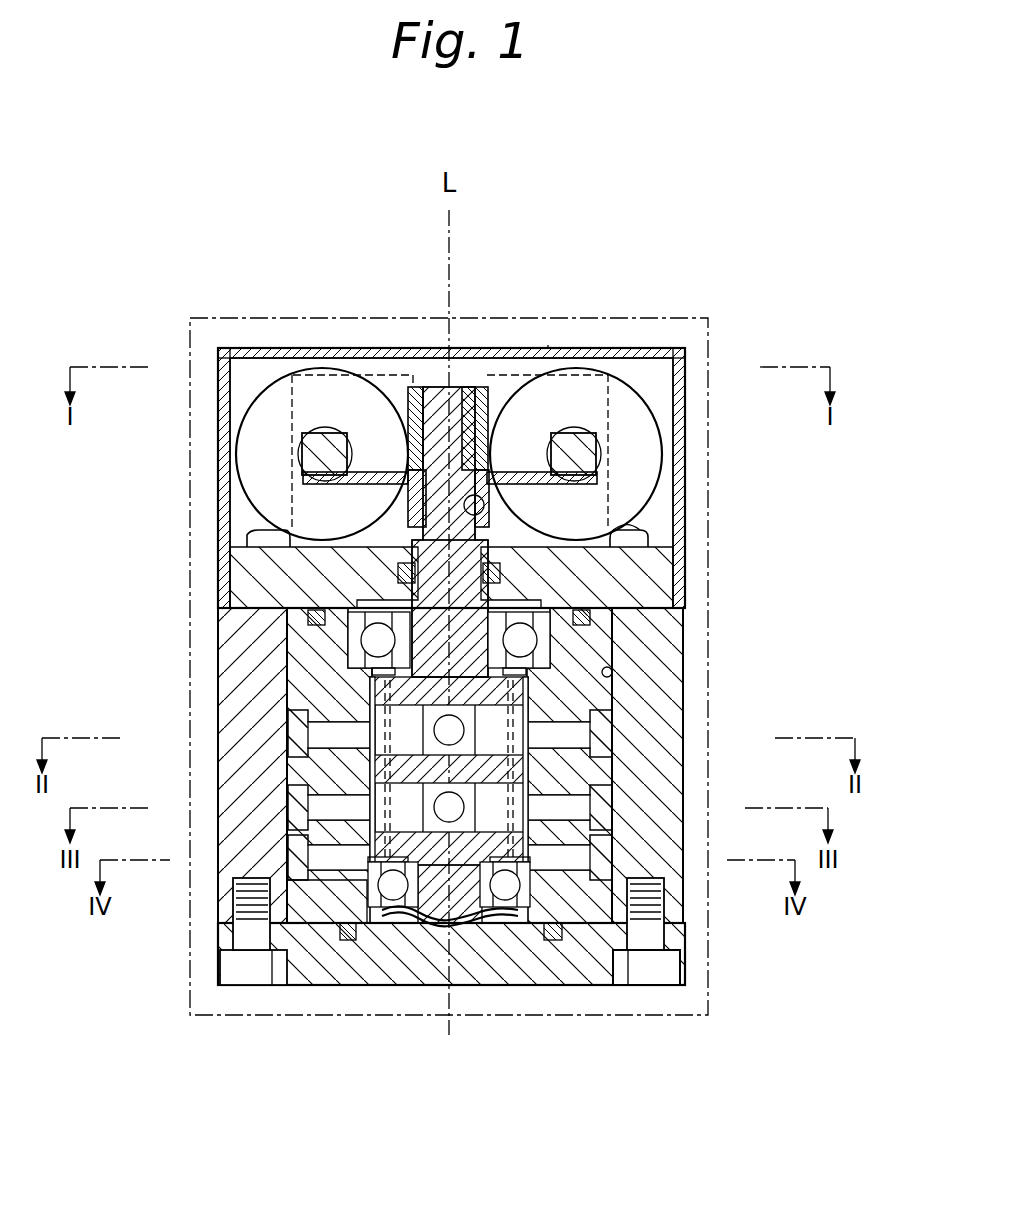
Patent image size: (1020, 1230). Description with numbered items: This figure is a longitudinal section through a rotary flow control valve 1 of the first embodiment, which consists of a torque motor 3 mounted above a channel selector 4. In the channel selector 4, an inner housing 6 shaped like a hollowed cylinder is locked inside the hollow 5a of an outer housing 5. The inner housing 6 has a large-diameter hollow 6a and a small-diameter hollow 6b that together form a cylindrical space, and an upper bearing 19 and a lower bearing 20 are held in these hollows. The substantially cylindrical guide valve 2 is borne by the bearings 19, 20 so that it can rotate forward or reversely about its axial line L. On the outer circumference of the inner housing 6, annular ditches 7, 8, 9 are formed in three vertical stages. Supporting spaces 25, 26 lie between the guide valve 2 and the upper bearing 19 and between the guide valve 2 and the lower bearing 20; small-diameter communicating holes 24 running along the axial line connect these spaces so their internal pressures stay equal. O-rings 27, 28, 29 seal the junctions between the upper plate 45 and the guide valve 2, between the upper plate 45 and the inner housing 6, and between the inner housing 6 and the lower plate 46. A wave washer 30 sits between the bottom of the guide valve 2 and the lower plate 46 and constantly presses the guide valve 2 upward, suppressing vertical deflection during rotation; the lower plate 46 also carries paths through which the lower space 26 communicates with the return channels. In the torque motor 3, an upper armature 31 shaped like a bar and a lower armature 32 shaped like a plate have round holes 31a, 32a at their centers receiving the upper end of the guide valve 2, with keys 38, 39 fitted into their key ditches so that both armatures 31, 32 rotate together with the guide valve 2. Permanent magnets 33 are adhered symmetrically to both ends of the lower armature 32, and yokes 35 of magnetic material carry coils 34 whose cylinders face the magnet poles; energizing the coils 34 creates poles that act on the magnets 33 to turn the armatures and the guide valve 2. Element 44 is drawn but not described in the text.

The rotary flow control valve 1 is at (548, 345).
The guide valve 2 is at (280, 685).
The torque motor 3 is at (712, 457).
The channel selector 4 is at (712, 644).
The outer housing 5 is at (680, 710).
The hollow of outer housing 5a is at (612, 672).
The inner housing 6 is at (615, 757).
The large-diameter hollow 6a is at (310, 612).
The small-diameter hollow 6b is at (335, 922).
The annular ditch 7 is at (295, 730).
The annular ditch 8 is at (295, 803).
The annular ditch 9 is at (295, 857).
The upper bearing 19 is at (355, 640).
The lower bearing 20 is at (385, 915).
The small-diameter communicating holes 24 is at (345, 838).
The supporting space 25 is at (565, 650).
The supporting space 26 is at (505, 907).
The O-ring 27 is at (665, 565).
The O-ring 28 is at (620, 605).
The O-ring 29 is at (553, 932).
The wave washer 30 is at (410, 922).
The upper armature 31 is at (488, 430).
The round hole 31a is at (440, 390).
The lower armature 32 is at (570, 445).
The round hole 32a is at (522, 505).
The permanent magnets 33 is at (318, 432).
The coil 34 is at (322, 385).
The yokes 35 is at (383, 377).
The key 38 is at (467, 390).
The key 39 is at (405, 500).
The pad 44 is at (630, 532).
The upper plate 45 is at (268, 548).
The lower plate 46 is at (613, 988).